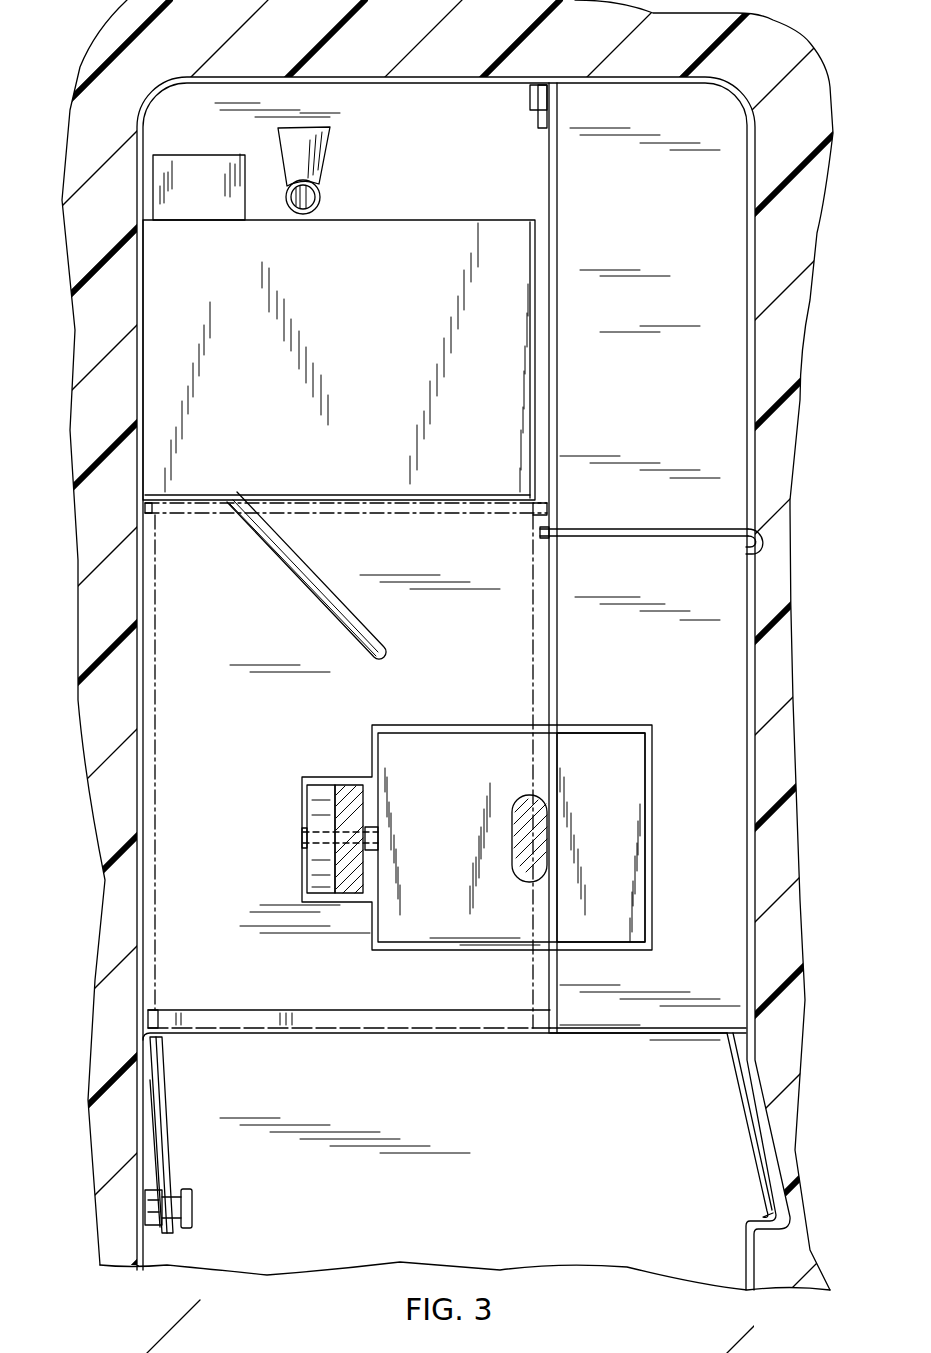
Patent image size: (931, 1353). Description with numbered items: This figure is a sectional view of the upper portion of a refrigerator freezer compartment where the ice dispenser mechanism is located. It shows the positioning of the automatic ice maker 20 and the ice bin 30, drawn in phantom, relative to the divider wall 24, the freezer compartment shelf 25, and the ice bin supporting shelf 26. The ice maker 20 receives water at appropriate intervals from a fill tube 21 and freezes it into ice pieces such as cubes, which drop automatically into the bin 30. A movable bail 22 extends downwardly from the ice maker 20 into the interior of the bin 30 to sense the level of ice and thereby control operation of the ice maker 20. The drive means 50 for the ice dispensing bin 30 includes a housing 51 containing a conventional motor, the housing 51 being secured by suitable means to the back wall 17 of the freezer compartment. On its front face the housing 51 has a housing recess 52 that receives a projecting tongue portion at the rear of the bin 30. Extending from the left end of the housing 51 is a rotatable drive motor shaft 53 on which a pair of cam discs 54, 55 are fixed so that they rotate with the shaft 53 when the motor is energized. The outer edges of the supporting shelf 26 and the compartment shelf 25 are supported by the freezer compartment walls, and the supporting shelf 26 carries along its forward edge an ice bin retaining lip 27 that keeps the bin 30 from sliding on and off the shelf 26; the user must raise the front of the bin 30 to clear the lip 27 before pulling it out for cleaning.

The back wall 17 is at (734, 680).
The automatic ice maker 20 is at (371, 366).
The fill tube 21 is at (320, 163).
The movable bail 22 is at (345, 600).
The divider wall 24 is at (558, 335).
The compartment shelf 25 is at (663, 536).
The supporting shelf 26 is at (627, 1028).
The ice bin retaining lip 27 is at (260, 1015).
The bin 30 is at (533, 627).
The drive means 50 is at (608, 730).
The housing 51 is at (623, 800).
The housing recess 52 is at (527, 853).
The drive motor shaft 53 is at (373, 835).
The cam disc 54 is at (323, 883).
The cam disc 55 is at (348, 883).